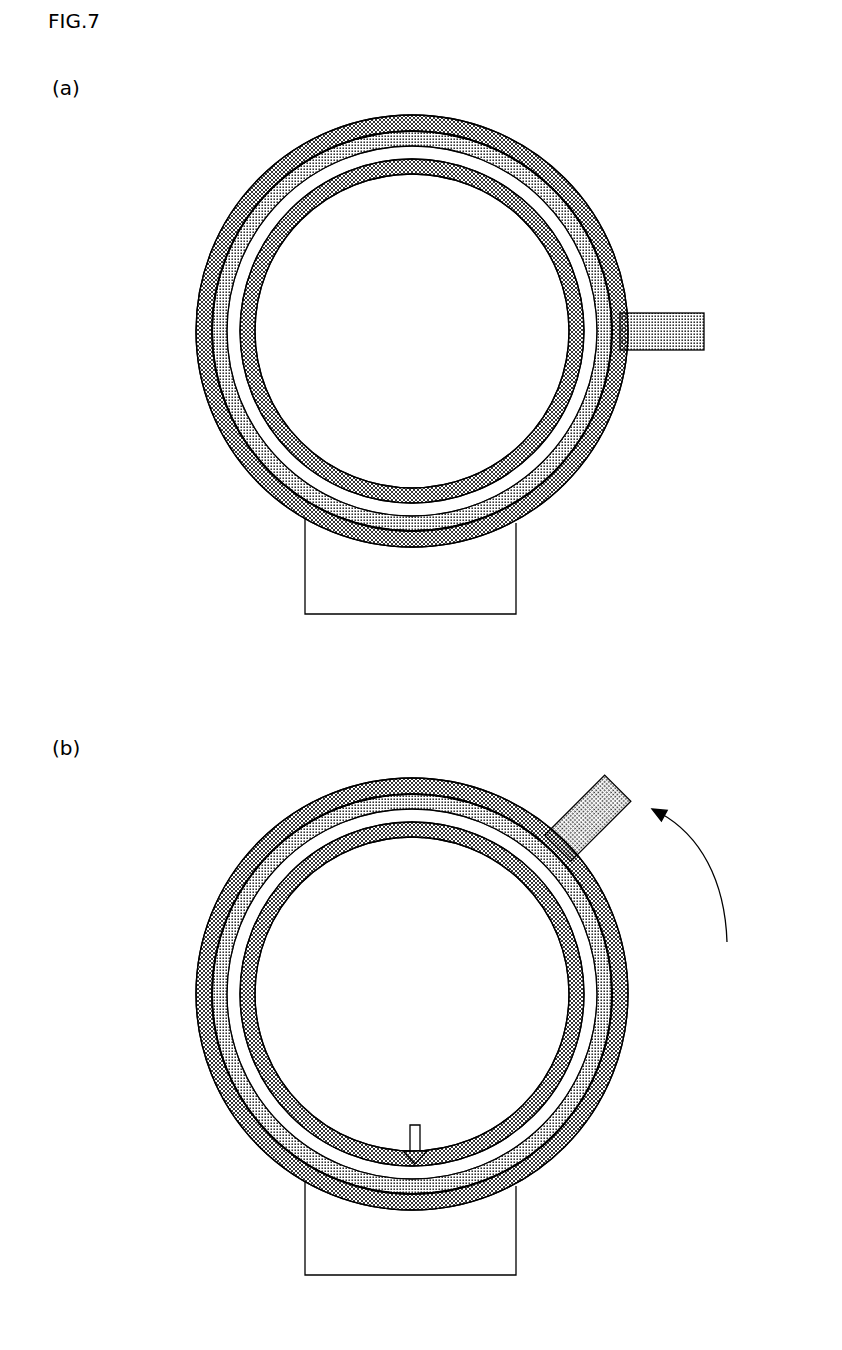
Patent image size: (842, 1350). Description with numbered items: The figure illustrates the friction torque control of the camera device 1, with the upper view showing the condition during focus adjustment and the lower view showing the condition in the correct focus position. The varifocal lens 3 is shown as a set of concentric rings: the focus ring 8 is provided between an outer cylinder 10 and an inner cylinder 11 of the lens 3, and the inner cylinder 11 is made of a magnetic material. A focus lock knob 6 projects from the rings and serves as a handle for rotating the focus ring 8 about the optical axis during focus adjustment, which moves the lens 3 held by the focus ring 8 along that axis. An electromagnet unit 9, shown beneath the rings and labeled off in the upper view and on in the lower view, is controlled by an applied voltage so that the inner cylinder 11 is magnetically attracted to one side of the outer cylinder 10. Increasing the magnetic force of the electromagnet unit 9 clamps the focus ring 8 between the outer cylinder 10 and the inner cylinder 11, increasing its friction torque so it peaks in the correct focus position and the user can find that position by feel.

The camera device 1 is at (617, 143).
The lens 3 is at (388, 319).
The focus lock knob 6 is at (705, 331).
The focus ring 8 is at (593, 407).
The electromagnet unit 9 is at (305, 569).
The outer cylinder 10 is at (607, 243).
The inner cylinder 11 is at (574, 298).